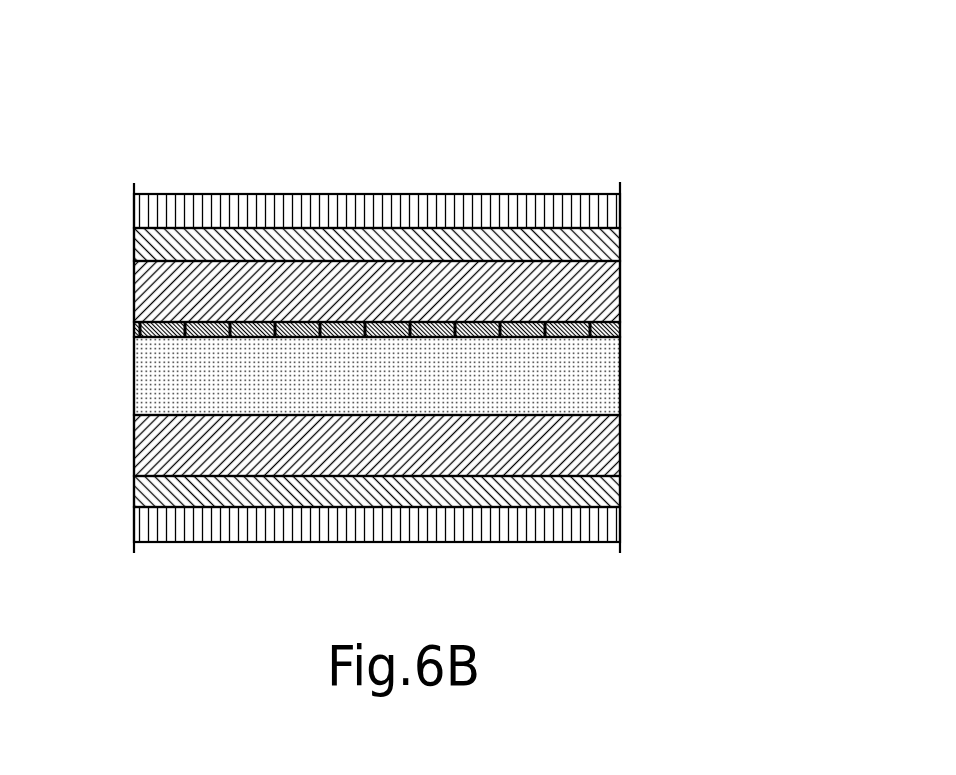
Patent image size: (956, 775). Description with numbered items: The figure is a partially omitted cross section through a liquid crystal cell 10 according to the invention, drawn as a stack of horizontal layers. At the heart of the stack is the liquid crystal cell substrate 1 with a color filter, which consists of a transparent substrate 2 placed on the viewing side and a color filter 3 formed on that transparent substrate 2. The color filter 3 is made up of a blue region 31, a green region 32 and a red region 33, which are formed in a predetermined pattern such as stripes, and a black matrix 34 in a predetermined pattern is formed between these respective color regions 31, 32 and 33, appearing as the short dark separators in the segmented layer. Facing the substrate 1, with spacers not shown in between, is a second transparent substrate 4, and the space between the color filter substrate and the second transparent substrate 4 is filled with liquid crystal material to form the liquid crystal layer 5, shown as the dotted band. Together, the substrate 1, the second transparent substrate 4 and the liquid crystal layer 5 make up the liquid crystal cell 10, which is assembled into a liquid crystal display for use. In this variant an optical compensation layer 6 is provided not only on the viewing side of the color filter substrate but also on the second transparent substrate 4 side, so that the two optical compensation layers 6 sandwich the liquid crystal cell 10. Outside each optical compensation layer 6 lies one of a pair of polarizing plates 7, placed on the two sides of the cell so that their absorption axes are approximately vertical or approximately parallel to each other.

The liquid crystal cell substrate with a color filter 1 is at (790, 323).
The transparent substrate 2 is at (577, 293).
The color filter 3 is at (727, 355).
The blue region 31 is at (567, 327).
The green region 32 is at (507, 340).
The red region 33 is at (400, 340).
The black matrix 34 is at (348, 327).
The second transparent substrate 4 is at (185, 447).
The liquid crystal layer 5 is at (180, 383).
The optical compensation layer 6 is at (173, 246).
The polarizing plate 7 is at (263, 213).
The liquid crystal cell 10 is at (750, 602).